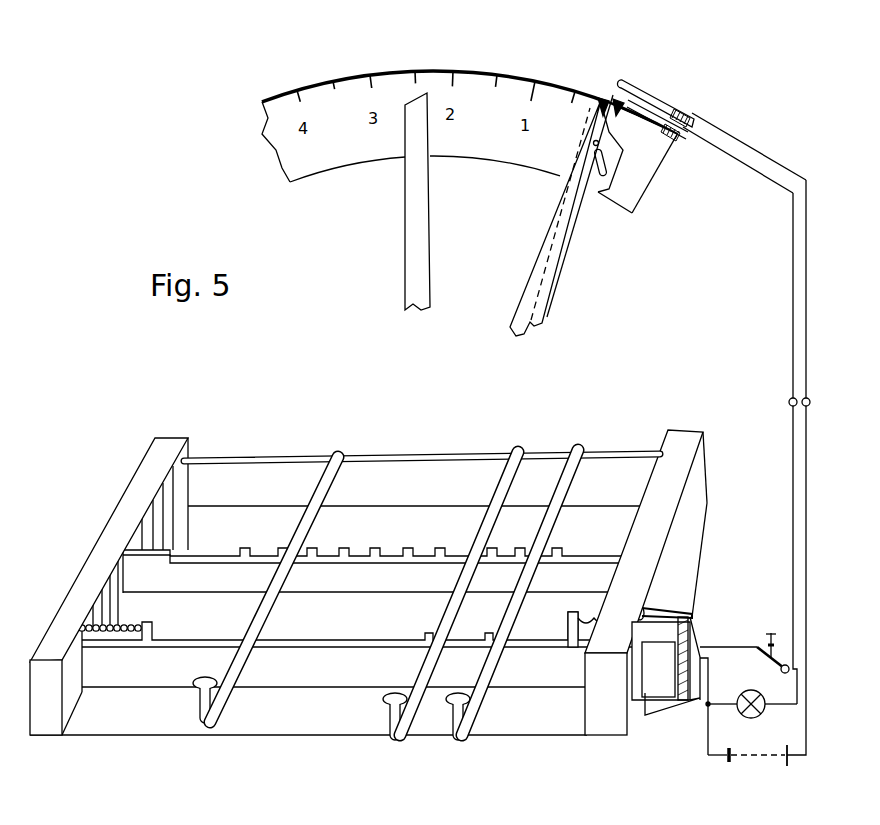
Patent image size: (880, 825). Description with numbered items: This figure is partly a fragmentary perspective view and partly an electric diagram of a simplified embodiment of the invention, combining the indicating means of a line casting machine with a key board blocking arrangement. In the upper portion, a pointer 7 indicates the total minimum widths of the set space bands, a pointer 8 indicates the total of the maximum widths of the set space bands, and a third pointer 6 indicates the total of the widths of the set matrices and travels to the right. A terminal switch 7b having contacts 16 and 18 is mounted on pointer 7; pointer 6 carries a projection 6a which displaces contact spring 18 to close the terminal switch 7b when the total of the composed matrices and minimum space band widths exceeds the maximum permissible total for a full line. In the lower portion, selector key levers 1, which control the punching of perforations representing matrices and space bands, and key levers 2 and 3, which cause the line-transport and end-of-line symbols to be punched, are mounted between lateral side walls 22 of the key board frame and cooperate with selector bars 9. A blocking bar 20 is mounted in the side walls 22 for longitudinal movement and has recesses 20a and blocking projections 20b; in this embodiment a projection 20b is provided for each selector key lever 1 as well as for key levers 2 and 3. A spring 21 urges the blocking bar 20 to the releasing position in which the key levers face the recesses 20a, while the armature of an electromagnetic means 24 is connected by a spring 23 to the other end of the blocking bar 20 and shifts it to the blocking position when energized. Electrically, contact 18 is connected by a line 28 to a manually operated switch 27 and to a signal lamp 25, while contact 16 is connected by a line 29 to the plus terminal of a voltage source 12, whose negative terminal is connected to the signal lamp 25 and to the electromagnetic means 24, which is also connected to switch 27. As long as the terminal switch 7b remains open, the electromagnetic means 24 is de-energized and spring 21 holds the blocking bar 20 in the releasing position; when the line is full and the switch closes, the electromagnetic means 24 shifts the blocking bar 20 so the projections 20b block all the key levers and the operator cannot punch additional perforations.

The selector key lever 1 is at (335, 452).
The key lever 2 is at (571, 447).
The key lever 3 is at (512, 447).
The third pointer 6 is at (548, 189).
The projection 6a is at (599, 98).
The pointer 7 is at (567, 253).
The terminal switch 7b is at (664, 108).
The pointer 8 is at (415, 232).
The selector bar 9 is at (388, 570).
The voltage source 12 is at (754, 746).
The contact 16 is at (653, 95).
The contact spring 18 is at (616, 97).
The blocking bar 20 is at (278, 675).
The recess 20a is at (467, 637).
The projection 20b is at (228, 639).
The spring 21 is at (133, 632).
The side wall 22 is at (163, 448).
The spring 23 is at (590, 627).
The electromagnetic means 24 is at (662, 678).
The signal lamp 25 is at (748, 692).
The manually operated switch 27 is at (768, 647).
The line 28 is at (793, 552).
The line 29 is at (806, 517).